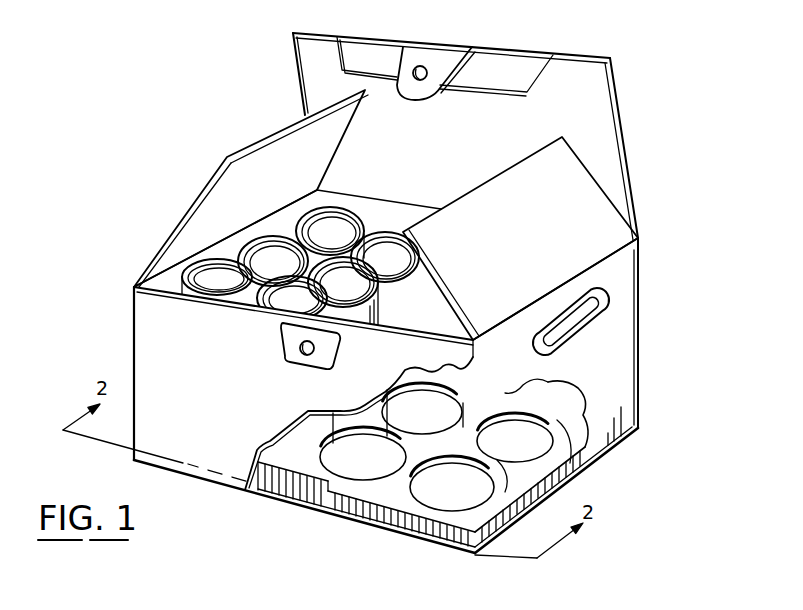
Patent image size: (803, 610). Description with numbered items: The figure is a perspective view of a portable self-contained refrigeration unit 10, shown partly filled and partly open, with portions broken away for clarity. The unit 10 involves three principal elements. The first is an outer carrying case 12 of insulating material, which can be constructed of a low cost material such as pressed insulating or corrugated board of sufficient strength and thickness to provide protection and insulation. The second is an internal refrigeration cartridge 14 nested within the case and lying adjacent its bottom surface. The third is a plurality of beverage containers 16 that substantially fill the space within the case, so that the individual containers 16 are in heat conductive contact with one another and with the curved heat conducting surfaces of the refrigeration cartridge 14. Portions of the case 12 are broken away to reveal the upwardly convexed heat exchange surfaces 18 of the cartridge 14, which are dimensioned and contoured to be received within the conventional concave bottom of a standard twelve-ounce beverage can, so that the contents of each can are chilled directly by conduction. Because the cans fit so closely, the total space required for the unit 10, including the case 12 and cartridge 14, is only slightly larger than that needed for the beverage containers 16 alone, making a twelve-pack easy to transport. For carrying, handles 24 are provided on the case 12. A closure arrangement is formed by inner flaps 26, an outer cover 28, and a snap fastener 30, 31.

The portable self-contained refrigeration unit 10 is at (684, 266).
The outer carrying case 12 is at (145, 324).
The internal refrigeration cartridge 14 is at (307, 483).
The beverage containers 16 is at (392, 240).
The heat exchange surfaces 18 is at (353, 477).
The handles 24 is at (597, 322).
The inner flaps 26 is at (655, 192).
The outer cover 28 is at (603, 122).
The snap fastener 30 is at (424, 66).
The snap fastener 31 is at (302, 360).